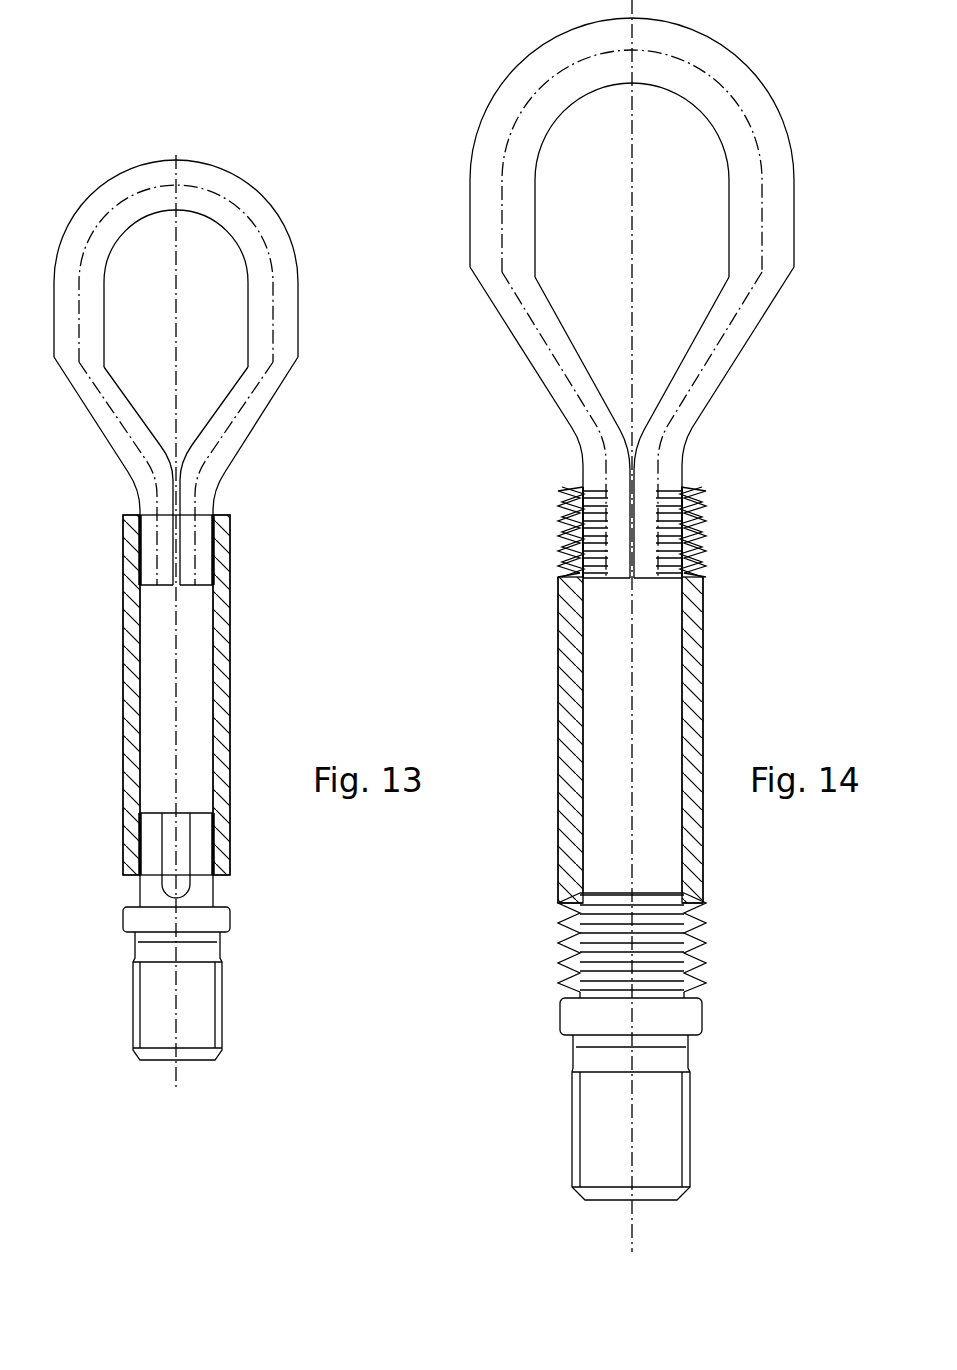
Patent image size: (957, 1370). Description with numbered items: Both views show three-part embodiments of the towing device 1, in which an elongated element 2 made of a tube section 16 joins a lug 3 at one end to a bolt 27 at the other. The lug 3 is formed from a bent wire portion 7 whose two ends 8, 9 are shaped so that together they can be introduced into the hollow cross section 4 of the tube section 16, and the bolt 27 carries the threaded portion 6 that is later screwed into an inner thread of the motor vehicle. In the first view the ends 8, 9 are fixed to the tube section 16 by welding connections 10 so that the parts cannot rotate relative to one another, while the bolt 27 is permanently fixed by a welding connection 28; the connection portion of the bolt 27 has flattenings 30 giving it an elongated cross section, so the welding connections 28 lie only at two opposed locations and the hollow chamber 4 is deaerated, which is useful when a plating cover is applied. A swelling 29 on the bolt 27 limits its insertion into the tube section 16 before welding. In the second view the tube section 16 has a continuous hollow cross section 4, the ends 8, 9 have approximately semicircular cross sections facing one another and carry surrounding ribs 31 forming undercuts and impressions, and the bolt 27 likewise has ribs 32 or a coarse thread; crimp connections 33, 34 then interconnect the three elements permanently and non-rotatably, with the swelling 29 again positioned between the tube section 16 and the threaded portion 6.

In FIG. 13, the towing device 1 is at (216, 777).
In FIG. 14, the towing device 1 is at (676, 843).
In FIG. 13, the elongated element 2 is at (236, 700).
In FIG. 14, the elongated element 2 is at (708, 838).
In FIG. 13, the lug 3 is at (270, 194).
In FIG. 14, the lug 3 is at (794, 180).
In FIG. 13, the hollow cross section 4 is at (195, 640).
In FIG. 14, the hollow cross section 4 is at (657, 660).
In FIG. 13, the threaded portion 6 is at (213, 1000).
In FIG. 14, the threaded portion 6 is at (682, 1135).
In FIG. 13, the wire portion 7 is at (273, 242).
In FIG. 14, the wire portion 7 is at (768, 145).
In FIG. 13, the first end of the wire portion 8 is at (152, 520).
In FIG. 14, the first end of the wire portion 8 is at (595, 470).
In FIG. 13, the second end of the wire portion 9 is at (203, 522).
In FIG. 14, the second end of the wire portion 9 is at (663, 478).
In FIG. 13, the welding connections 10 is at (215, 533).
In FIG. 13, the tube section 16 is at (230, 661).
In FIG. 14, the tube section 16 is at (696, 685).
In FIG. 13, the bolt 27 is at (214, 936).
In FIG. 14, the bolt 27 is at (674, 1046).
In FIG. 13, the welding connection 28 is at (215, 845).
In FIG. 13, the swelling 29 is at (207, 922).
In FIG. 14, the swelling 29 is at (670, 1022).
In FIG. 13, the flattenings 30 is at (180, 888).
In FIG. 14, the surrounding ribs 31 is at (697, 514).
In FIG. 14, the ribs on the bolt 32 is at (656, 951).
In FIG. 14, the first crimp connection 33 is at (704, 544).
In FIG. 14, the second crimp connection 34 is at (706, 968).